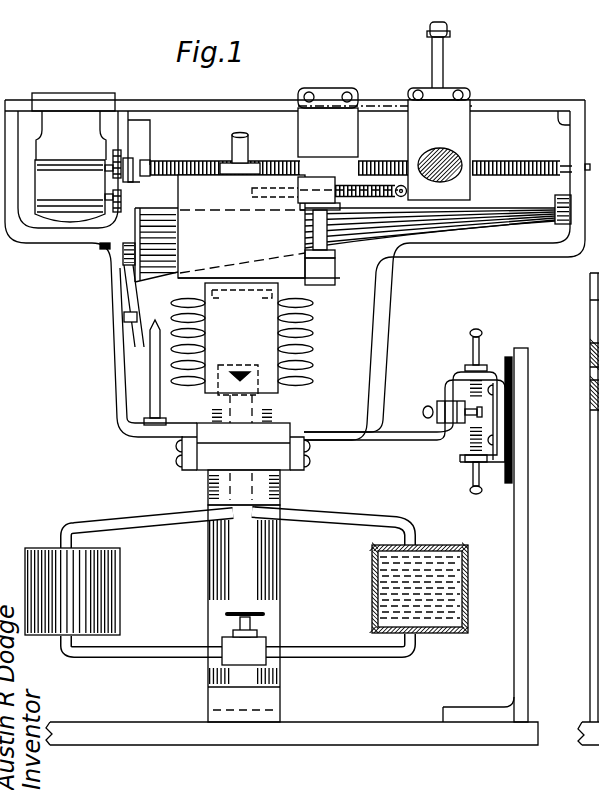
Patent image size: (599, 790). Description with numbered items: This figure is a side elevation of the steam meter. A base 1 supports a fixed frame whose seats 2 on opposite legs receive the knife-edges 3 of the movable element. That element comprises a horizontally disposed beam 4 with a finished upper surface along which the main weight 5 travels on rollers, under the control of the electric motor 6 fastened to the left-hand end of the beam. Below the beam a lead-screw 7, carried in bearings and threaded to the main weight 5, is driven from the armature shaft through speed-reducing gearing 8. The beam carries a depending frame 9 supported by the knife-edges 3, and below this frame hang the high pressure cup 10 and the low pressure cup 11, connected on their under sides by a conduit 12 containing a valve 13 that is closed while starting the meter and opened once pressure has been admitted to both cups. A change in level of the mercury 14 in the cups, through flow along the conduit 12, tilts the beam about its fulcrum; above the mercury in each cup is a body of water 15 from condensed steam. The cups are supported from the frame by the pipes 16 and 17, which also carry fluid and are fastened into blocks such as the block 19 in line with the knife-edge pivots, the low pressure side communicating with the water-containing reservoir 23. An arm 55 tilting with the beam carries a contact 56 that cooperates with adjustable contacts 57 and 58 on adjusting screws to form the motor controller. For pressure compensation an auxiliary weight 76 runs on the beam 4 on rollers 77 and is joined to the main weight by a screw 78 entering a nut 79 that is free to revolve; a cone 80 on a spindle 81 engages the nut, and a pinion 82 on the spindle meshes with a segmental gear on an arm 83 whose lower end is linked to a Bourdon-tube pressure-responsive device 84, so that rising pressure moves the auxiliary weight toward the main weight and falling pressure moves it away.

The base 1 is at (153, 727).
The seats 2 is at (592, 395).
The knife-edges 3 is at (258, 384).
The beam 4 is at (507, 100).
The main weight 5 is at (439, 111).
The electric motor 6 is at (73, 157).
The lead-screw 7 is at (182, 163).
The speed-reducing gearing 8 is at (121, 160).
The depending frame 9 is at (376, 343).
The high pressure cup 10 is at (37, 547).
The low pressure cup 11 is at (468, 557).
The conduit 12 is at (358, 663).
The valve 13 is at (244, 639).
The mercury 14 is at (378, 587).
The body of water 15 is at (378, 562).
The pipe 16 is at (123, 520).
The pipe 17 is at (357, 522).
The block 19 is at (266, 492).
The water-containing reservoir 23 is at (241, 226).
The arm 55 is at (397, 440).
The contact 56 is at (466, 396).
The adjustable contact 57 is at (477, 363).
The adjustable contact 58 is at (467, 432).
The auxiliary weight 76 is at (328, 122).
The rollers 77 is at (306, 88).
The screw 78 is at (367, 188).
The nut 79 is at (282, 203).
The cone 80 is at (365, 245).
The spindle 81 is at (98, 248).
The pinion 82 is at (121, 260).
The arm 83 is at (138, 294).
The pressure-responsive device 84 is at (152, 378).